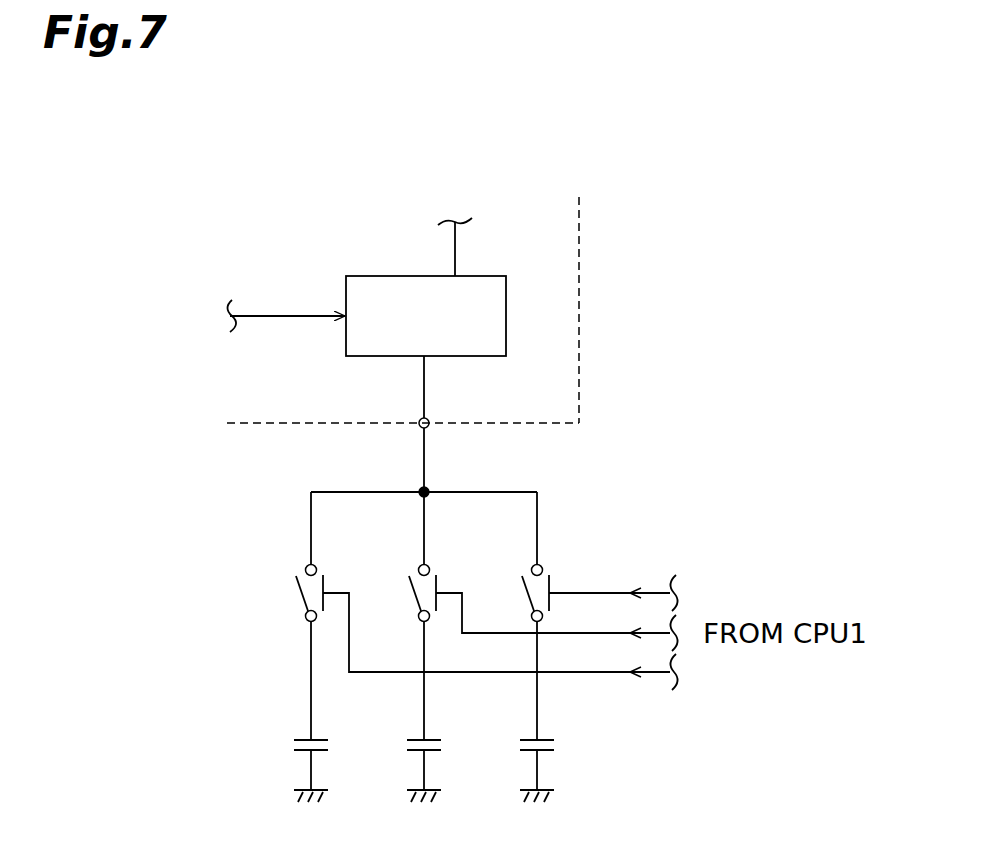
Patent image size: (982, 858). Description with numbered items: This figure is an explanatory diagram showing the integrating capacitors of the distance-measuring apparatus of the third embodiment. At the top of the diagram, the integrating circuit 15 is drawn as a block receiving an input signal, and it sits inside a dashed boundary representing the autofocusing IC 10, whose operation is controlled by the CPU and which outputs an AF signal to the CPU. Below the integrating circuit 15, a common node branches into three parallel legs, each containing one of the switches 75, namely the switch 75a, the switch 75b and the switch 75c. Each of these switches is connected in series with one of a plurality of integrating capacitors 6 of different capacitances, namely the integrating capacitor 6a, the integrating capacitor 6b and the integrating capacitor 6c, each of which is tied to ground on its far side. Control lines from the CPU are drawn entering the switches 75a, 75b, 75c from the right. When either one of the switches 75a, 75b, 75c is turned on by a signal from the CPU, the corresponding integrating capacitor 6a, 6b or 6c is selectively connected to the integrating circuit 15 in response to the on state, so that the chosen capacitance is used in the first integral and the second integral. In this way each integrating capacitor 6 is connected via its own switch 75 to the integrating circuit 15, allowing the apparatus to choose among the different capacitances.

The integrating circuit 15 is at (488, 276).
The autofocusing IC 10 is at (579, 305).
The switch 75 is at (445, 609).
The switch 75a is at (295, 586).
The switch 75b is at (408, 586).
The switch 75c is at (521, 586).
The integrating capacitor 6 is at (448, 711).
The integrating capacitor 6a is at (301, 740).
The integrating capacitor 6b is at (414, 740).
The integrating capacitor 6c is at (528, 740).